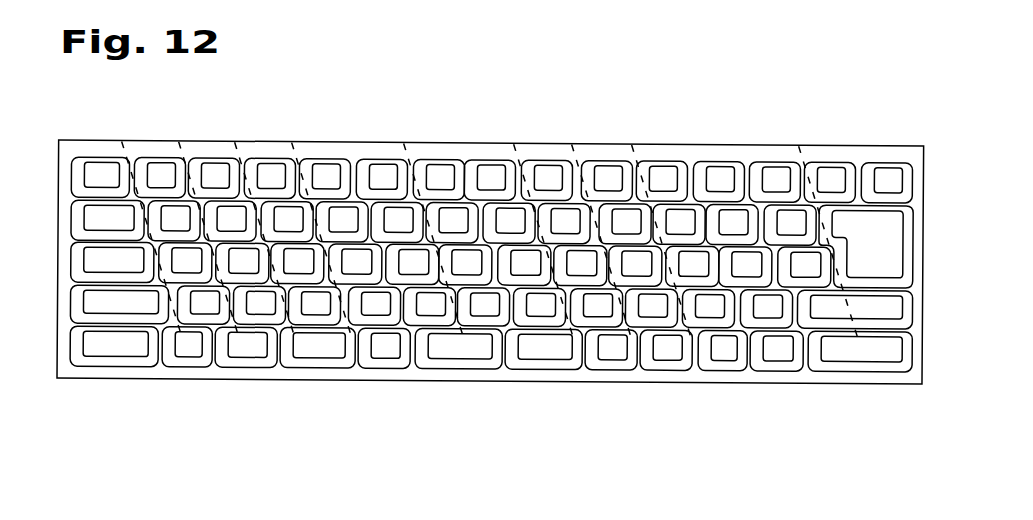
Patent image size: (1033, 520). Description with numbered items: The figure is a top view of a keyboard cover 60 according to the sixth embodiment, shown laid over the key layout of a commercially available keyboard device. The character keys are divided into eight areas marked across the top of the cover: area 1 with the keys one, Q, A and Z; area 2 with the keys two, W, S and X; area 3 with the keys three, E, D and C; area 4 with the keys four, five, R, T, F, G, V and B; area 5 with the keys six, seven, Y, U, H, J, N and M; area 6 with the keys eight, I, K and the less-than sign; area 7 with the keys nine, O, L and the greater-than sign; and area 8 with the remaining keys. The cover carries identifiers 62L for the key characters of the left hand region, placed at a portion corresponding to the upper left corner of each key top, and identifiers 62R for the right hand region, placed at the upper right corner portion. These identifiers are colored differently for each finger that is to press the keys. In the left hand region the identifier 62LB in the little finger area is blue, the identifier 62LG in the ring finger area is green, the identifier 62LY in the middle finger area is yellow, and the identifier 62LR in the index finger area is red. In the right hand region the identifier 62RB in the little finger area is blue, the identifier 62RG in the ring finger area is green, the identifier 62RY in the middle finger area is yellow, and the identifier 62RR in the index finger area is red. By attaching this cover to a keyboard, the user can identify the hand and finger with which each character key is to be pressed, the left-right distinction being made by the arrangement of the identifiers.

The keyboard cover 60 is at (843, 144).
The area 1 is at (120, 141).
The area 2 is at (177, 141).
The area 3 is at (285, 141).
The area 4 is at (395, 141).
The area 5 is at (502, 141).
The area 6 is at (560, 141).
The area 7 is at (570, 141).
The area 8 is at (790, 141).
The identifier 62L is at (425, 425).
The identifier 62LB is at (192, 288).
The identifier 62LG is at (243, 287).
The identifier 62LY is at (300, 287).
The identifier 62LR is at (355, 288).
The identifier 62R is at (532, 425).
The identifier 62RR is at (555, 288).
The identifier 62RY is at (612, 288).
The identifier 62RG is at (667, 288).
The identifier 62RB is at (728, 288).